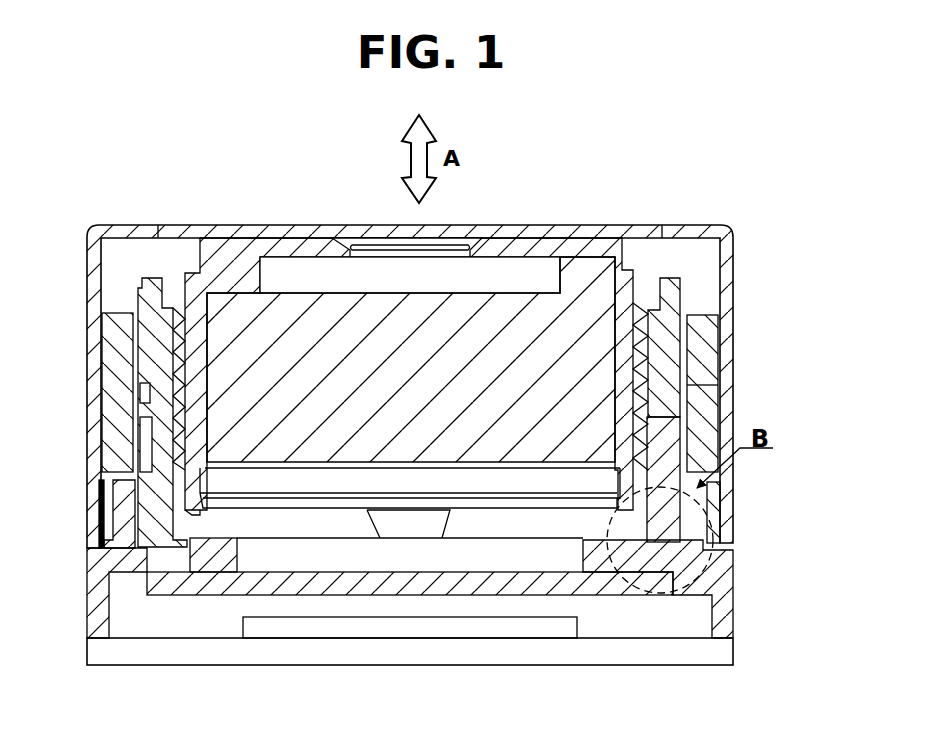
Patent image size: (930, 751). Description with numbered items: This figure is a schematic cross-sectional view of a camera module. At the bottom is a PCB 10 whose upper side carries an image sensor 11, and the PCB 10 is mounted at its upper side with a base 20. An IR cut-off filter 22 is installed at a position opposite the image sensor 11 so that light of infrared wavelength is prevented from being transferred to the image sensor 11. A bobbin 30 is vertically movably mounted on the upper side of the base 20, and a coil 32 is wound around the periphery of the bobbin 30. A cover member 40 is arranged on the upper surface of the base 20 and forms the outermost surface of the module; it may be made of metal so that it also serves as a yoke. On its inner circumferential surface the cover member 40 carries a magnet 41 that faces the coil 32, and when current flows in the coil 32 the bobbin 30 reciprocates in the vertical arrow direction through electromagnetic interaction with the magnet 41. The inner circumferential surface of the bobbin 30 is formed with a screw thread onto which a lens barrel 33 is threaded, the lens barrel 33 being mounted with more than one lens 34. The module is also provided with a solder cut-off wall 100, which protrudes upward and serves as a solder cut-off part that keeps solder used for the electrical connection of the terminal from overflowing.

The PCB 10 is at (722, 650).
The image sensor 11 is at (362, 632).
The base 20 is at (722, 585).
The IR cut-off filter 22 is at (502, 588).
The bobbin 30 is at (668, 280).
The coil 32 is at (680, 372).
The lens barrel 33 is at (177, 382).
The lens 34 is at (257, 440).
The cover member 40 is at (728, 238).
The magnet 41 is at (710, 348).
The solder cut-off wall 100 is at (670, 533).